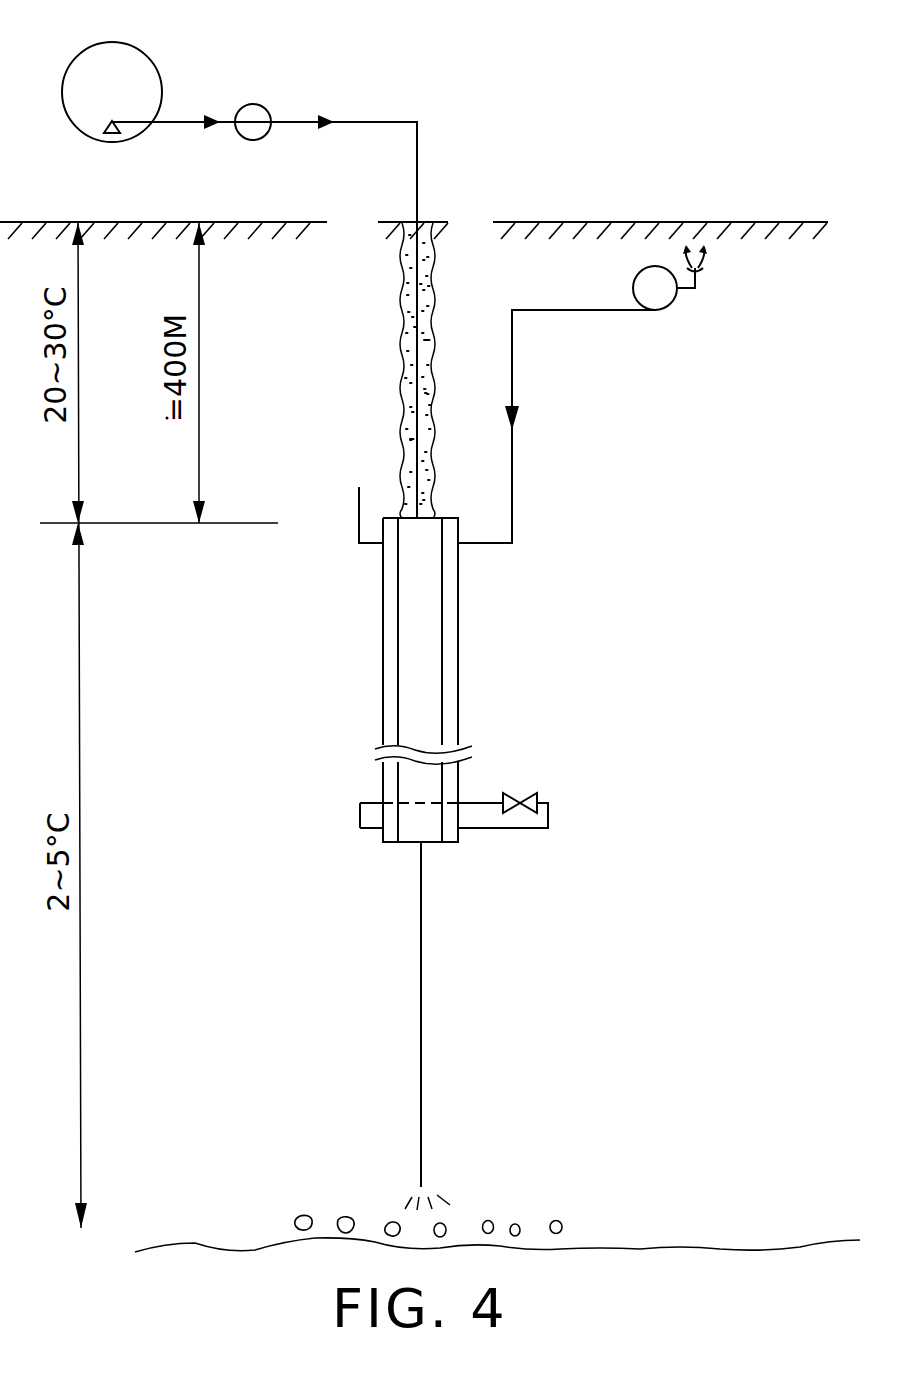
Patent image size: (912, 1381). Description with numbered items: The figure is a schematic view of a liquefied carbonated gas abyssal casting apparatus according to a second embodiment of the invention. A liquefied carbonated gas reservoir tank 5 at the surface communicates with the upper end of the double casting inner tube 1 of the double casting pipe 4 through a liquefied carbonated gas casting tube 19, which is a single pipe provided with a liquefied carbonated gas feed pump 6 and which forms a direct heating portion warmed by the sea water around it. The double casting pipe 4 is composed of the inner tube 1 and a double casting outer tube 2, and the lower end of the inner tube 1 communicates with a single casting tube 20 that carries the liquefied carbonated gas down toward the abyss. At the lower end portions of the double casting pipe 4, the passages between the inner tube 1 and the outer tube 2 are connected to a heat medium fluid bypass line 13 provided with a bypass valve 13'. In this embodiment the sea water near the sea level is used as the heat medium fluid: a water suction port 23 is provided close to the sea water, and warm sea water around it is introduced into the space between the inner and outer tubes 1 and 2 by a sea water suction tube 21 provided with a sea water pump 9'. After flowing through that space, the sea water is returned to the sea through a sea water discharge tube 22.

The double casting inner tube 1 is at (398, 590).
The double casting outer tube 2 is at (458, 638).
The double casting pipe 4 is at (443, 680).
The liquefied carbonated gas reservoir tank 5 is at (151, 62).
The liquefied carbonated gas feed pump 6 is at (267, 109).
The sea water pump 9' is at (680, 312).
The heat medium fluid bypass line 13 is at (510, 812).
The bypass valve 13' is at (549, 780).
The liquefied carbonated gas casting tube 19 is at (181, 122).
The single casting tube 20 is at (422, 1026).
The sea water suction tube 21 is at (515, 375).
The sea water discharge tube 22 is at (356, 508).
The water suction port 23 is at (700, 268).